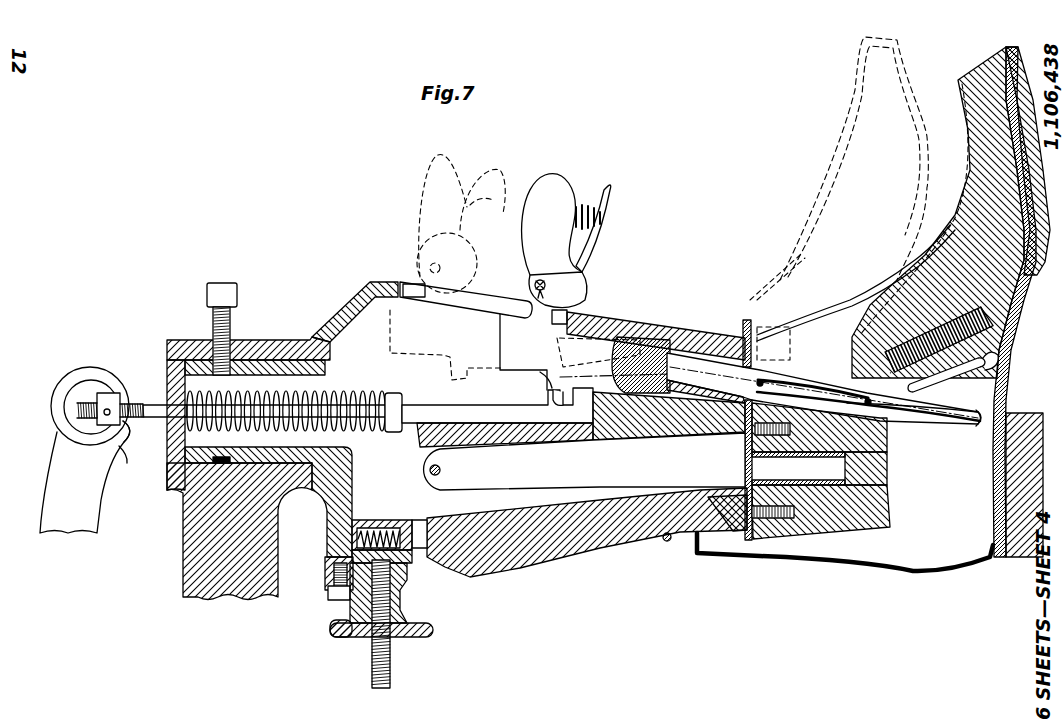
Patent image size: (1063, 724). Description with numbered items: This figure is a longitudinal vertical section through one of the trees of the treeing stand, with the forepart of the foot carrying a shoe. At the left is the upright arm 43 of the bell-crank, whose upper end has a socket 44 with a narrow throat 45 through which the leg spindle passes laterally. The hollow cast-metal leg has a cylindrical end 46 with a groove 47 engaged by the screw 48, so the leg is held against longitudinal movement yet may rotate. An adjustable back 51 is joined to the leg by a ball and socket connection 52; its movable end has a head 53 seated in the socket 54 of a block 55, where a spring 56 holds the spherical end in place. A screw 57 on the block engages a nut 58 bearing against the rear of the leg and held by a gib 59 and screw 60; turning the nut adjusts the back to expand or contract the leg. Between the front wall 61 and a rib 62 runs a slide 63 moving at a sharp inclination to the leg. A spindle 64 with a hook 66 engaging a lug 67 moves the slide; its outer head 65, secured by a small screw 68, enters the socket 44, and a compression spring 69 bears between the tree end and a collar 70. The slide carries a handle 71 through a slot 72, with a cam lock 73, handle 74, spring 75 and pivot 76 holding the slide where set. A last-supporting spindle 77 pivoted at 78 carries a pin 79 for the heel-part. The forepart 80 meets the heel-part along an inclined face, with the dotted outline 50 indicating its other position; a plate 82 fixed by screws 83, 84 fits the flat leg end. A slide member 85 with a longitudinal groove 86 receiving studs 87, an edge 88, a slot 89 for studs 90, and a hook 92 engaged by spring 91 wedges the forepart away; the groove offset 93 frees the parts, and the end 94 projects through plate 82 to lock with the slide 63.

The upright arm 43 is at (45, 506).
The socket 44 is at (82, 386).
The narrow throat 45 is at (292, 340).
The cylindrical end 46 is at (190, 341).
The groove 47 is at (190, 508).
The screw 48 is at (235, 295).
The hammer spur (dotted position) 50 is at (872, 158).
The adjustable back 51 is at (612, 530).
The ball and socket connection 52 is at (727, 540).
The head 53 is at (422, 522).
The socket 54 is at (366, 521).
The block 55 is at (330, 561).
The spring 56 is at (396, 529).
The screw 57 is at (391, 665).
The nut 58 is at (361, 636).
The gib 59 is at (333, 590).
The screw 60 is at (333, 629).
The front wall 61 is at (646, 326).
The rib 62 is at (627, 428).
The slide 63 is at (610, 335).
The spindle 64 is at (488, 413).
The head 65 is at (118, 392).
The hook 66 is at (555, 408).
The lug 67 is at (550, 385).
The small screw 68 is at (105, 416).
The compression spring 69 is at (358, 396).
The collar 70 is at (396, 400).
The handle 71 is at (557, 179).
The slot 72 is at (491, 293).
The cam lock 73 is at (582, 290).
The handle 74 is at (606, 216).
The compression spring 75 is at (590, 212).
The pivot 76 is at (536, 282).
The last-supporting spindle 77 is at (558, 480).
The pivot 78 is at (441, 470).
The pin 79 is at (811, 500).
The forepart 80 is at (947, 240).
The plate 82 is at (747, 320).
The screw 83 is at (748, 426).
The screw 84 is at (888, 526).
The slide member 85 is at (921, 418).
The longitudinal groove 86 is at (982, 416).
The studs 87 is at (760, 378).
The edge 88 is at (999, 330).
The slot 89 is at (1000, 362).
The studs 90 is at (942, 381).
The spring 91 is at (1031, 285).
The hook 92 is at (881, 300).
The offset 93 is at (802, 394).
The end of slide member 94 is at (715, 365).